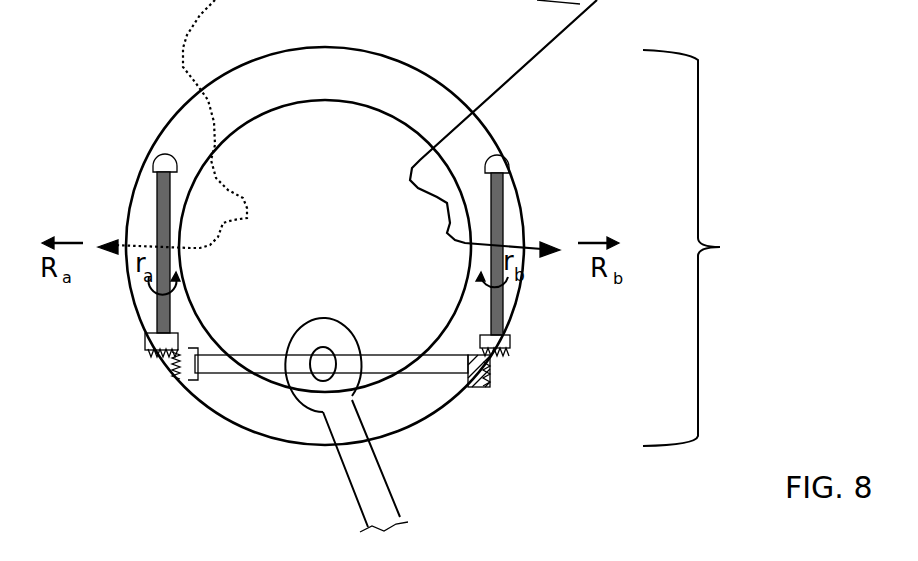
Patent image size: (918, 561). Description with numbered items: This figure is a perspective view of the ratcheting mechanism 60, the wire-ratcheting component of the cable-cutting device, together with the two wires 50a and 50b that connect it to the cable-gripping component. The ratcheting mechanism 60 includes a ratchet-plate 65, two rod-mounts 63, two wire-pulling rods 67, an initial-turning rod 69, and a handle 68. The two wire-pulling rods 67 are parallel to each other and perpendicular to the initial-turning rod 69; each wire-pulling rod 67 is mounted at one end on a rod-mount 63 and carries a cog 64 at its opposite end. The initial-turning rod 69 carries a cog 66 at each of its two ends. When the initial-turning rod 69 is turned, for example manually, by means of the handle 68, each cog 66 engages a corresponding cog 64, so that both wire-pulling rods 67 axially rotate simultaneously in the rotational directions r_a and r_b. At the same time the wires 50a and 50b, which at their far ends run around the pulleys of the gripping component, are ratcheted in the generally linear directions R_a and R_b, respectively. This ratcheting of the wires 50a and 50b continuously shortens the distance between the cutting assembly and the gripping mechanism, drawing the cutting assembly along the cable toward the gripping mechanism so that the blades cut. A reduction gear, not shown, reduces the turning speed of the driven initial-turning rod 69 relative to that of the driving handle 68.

The ratcheting mechanism 60 is at (722, 247).
The rod-mount 63 is at (510, 163).
The cog 64 is at (478, 375).
The ratchet-plate 65 is at (350, 70).
The cog 66 is at (487, 377).
The wire-pulling rod 67 is at (521, 200).
The handle 68 is at (380, 487).
The initial-turning rod 69 is at (230, 373).
The wire 50a is at (243, 199).
The wire 50b is at (417, 182).